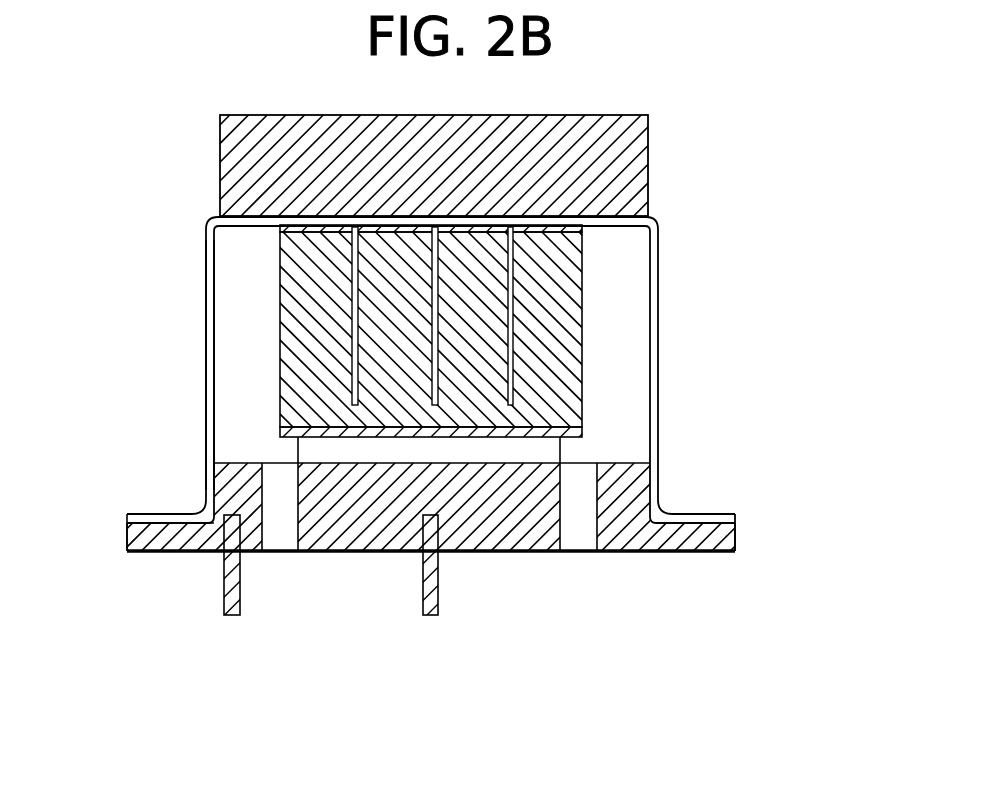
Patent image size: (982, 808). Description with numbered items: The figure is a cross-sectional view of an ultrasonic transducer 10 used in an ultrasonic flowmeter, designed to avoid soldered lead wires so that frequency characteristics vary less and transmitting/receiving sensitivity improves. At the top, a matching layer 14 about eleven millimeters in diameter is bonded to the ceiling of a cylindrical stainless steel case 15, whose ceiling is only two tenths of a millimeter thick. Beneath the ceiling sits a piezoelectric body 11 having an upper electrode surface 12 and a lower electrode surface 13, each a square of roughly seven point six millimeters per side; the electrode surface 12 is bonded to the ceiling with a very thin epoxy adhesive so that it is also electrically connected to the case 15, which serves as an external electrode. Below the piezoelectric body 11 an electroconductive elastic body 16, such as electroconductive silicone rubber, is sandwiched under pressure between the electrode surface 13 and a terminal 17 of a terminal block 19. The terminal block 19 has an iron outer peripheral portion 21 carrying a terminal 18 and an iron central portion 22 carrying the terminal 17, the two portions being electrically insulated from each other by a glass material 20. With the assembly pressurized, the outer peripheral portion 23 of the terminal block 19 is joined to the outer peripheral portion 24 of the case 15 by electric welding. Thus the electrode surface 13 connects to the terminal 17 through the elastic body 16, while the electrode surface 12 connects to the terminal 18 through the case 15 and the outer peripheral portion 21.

The ultrasonic transducer 10 is at (207, 226).
The piezoelectric body 11 is at (560, 346).
The electrode surface 12 is at (577, 231).
The electrode surface 13 is at (577, 435).
The matching layer 14 is at (630, 176).
The case 15 is at (205, 313).
The electroconductive elastic body 16 is at (547, 445).
The terminal 17 is at (428, 617).
The terminal 18 is at (228, 617).
The terminal block 19 is at (735, 540).
The glass material 20 is at (287, 540).
The outer peripheral portion 21 is at (632, 538).
The central portion 22 is at (340, 545).
The outer peripheral portion 23 is at (152, 536).
The outer peripheral portion 24 is at (155, 512).